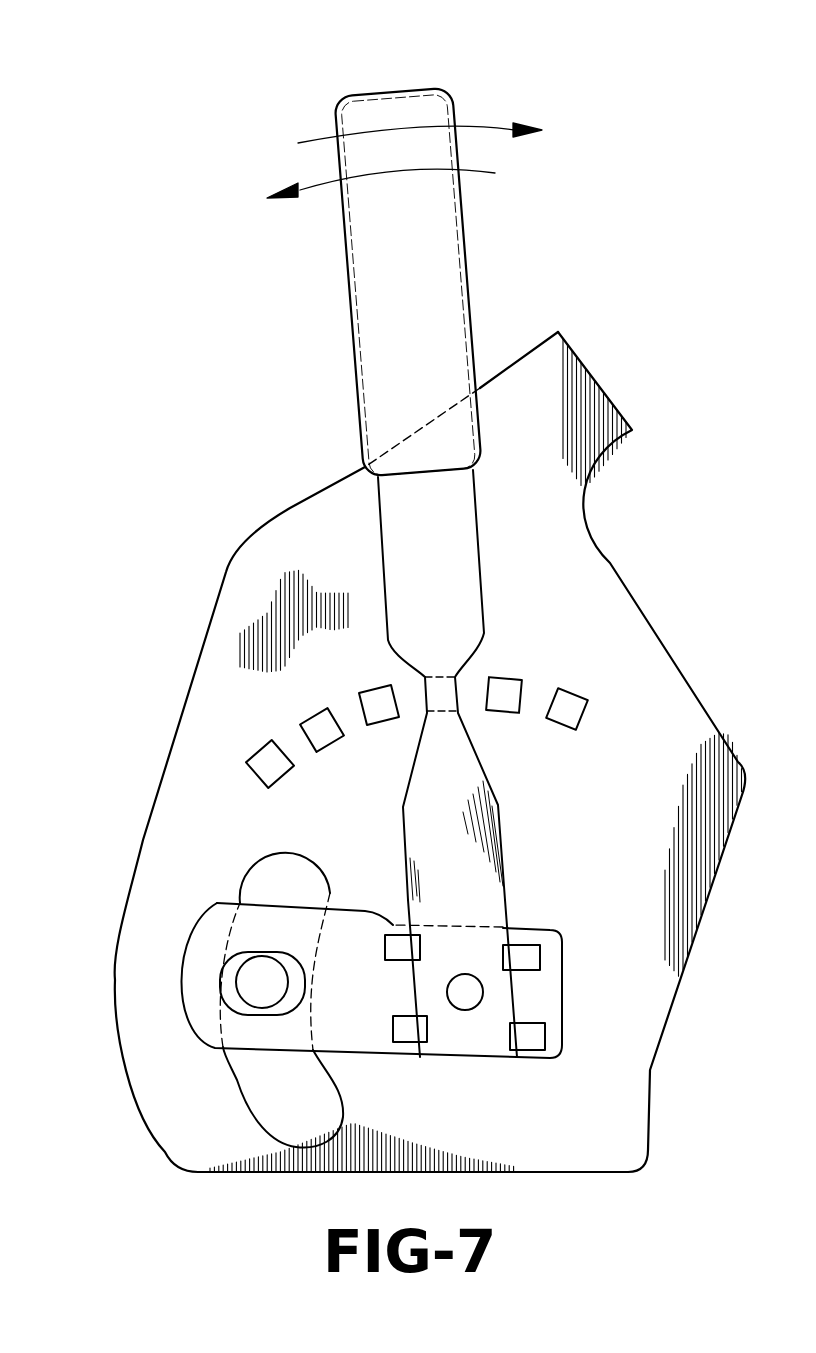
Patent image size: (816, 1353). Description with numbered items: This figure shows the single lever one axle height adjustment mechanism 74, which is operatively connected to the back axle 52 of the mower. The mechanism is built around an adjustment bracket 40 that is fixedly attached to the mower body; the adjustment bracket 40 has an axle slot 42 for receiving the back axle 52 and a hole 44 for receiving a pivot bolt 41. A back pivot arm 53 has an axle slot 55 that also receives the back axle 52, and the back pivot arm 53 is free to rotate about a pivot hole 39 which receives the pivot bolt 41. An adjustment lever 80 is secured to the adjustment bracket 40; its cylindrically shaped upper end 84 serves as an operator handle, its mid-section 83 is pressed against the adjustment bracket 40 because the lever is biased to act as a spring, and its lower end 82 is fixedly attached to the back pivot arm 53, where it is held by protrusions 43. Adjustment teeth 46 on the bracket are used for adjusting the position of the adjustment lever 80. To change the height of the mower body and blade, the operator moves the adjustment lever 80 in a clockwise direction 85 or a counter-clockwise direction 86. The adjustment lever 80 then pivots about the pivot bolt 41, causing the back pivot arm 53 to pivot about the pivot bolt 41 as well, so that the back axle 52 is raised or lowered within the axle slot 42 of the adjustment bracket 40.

The single lever one axle height adjustment mechanism 74 is at (163, 369).
The adjustment bracket 40 is at (588, 579).
The upper end 84 is at (362, 112).
The clockwise direction 85 is at (498, 128).
The counter-clockwise direction 86 is at (312, 190).
The adjustment lever 80 is at (447, 550).
The mid-section 83 is at (440, 695).
The lower end 82 is at (490, 1025).
The back pivot arm 53 is at (371, 1001).
The adjustment teeth 46 is at (570, 703).
The protrusions 43 is at (520, 962).
The pivot hole 39 is at (465, 972).
The hole 44 is at (459, 1045).
The pivot bolt 41 is at (462, 1003).
The axle slot 42 is at (305, 1123).
The axle slot 55 is at (232, 975).
The back axle 52 is at (258, 980).